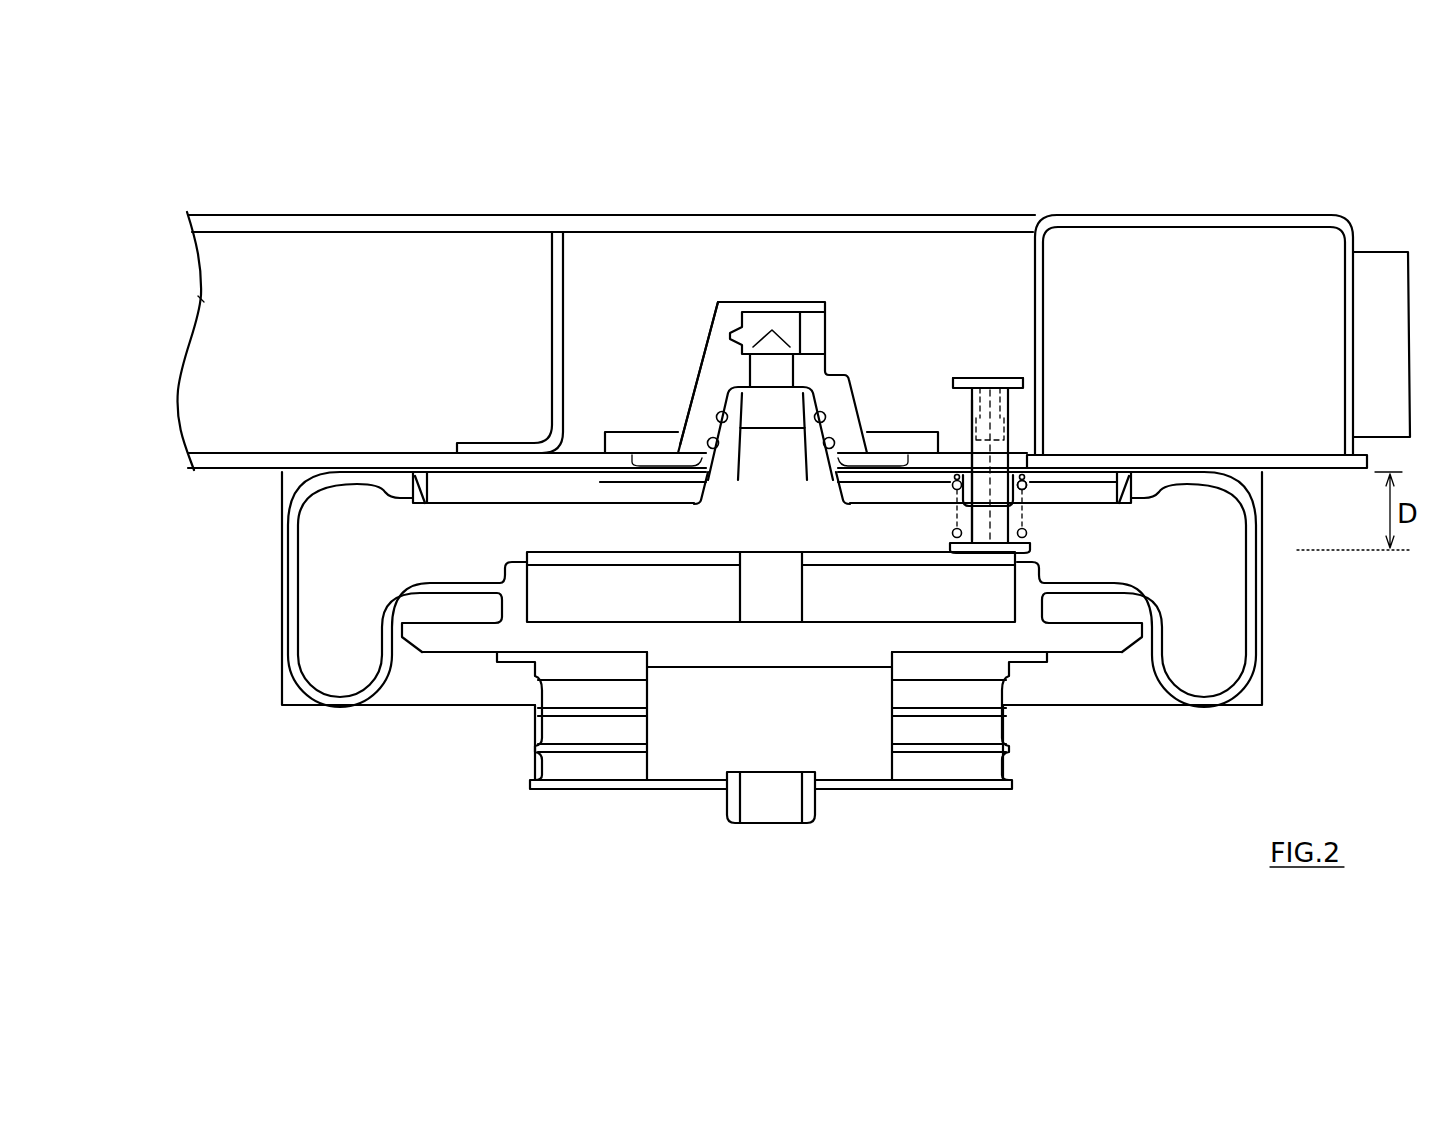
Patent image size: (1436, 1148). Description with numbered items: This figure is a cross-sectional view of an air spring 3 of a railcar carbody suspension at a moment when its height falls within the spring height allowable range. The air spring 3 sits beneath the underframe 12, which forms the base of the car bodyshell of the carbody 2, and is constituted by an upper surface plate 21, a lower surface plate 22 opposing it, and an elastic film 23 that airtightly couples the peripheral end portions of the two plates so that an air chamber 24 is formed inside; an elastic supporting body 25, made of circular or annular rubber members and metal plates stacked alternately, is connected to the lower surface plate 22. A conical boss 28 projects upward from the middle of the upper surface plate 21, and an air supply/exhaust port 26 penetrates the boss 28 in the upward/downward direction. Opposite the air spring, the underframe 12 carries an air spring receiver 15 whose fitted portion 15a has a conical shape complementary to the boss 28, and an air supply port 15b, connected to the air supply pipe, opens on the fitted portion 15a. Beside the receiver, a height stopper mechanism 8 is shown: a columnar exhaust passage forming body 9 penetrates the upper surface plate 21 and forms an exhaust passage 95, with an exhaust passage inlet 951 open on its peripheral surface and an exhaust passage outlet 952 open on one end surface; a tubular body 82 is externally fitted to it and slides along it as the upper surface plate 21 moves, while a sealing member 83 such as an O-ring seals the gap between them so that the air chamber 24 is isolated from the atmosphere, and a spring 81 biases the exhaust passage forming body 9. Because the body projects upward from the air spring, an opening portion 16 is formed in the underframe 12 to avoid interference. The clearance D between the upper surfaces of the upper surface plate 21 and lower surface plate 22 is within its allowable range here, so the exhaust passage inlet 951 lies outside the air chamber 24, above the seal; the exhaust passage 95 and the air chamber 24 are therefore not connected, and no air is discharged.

The carbody 2 is at (1310, 169).
The air spring 3 is at (1221, 730).
The height stopper mechanism 8 is at (941, 531).
The exhaust passage forming body 9 is at (963, 376).
The underframe 12 is at (1272, 215).
The air spring receiver 15 is at (716, 318).
The fitted portion 15a is at (704, 362).
The air supply port 15b is at (771, 330).
The opening portion 16 is at (1014, 458).
The upper surface plate 21 is at (443, 510).
The lower surface plate 22 is at (457, 653).
The elastic film 23 is at (383, 690).
The air chamber 24 is at (1211, 622).
The elastic supporting body 25 is at (913, 790).
The air supply/exhaust port 26 is at (803, 425).
The boss 28 is at (714, 430).
The spring 81 is at (1027, 533).
The tubular body 82 is at (1027, 486).
The sealing member 83 is at (953, 486).
The exhaust passage 95 is at (1018, 378).
The exhaust passage inlet 951 is at (967, 445).
The exhaust passage outlet 952 is at (990, 375).